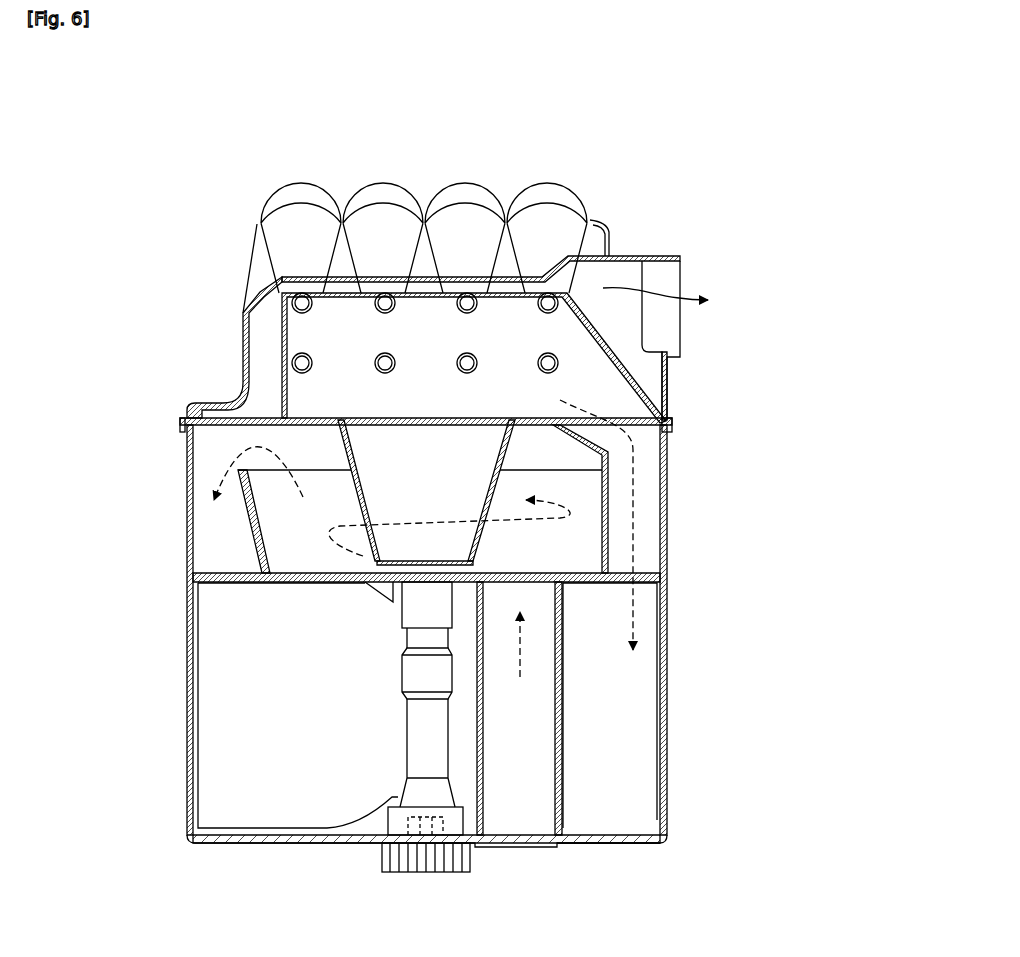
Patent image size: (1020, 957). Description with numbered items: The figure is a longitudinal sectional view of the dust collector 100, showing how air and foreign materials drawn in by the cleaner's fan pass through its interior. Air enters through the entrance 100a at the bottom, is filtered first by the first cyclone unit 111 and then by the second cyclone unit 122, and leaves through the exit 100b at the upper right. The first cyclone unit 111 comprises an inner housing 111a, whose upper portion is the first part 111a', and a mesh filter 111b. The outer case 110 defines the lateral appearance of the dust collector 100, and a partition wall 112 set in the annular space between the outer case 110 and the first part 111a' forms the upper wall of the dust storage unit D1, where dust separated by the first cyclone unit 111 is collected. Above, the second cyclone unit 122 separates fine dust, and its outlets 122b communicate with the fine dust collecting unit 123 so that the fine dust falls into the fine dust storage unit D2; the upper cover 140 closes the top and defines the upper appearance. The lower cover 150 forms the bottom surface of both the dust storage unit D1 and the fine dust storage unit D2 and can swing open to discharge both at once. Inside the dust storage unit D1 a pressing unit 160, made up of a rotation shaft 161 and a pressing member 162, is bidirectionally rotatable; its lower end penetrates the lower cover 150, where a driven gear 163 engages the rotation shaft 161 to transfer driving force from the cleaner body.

The dust collector 100 is at (208, 146).
The outer case 110 is at (187, 505).
The partition wall 112 is at (233, 572).
The first cyclone unit 111 is at (805, 480).
The inner housing 111a is at (681, 614).
The first part 111a' is at (651, 499).
The mesh filter 111b is at (505, 497).
The second cyclone unit 122 is at (549, 218).
The outlets 122b is at (292, 362).
The fine dust collecting unit 123 is at (612, 392).
The upper cover 140 is at (636, 256).
The entrance 100a is at (506, 846).
The exit 100b is at (667, 277).
The lower cover 150 is at (622, 845).
The pressing unit 160 is at (117, 677).
The rotation shaft 161 is at (417, 673).
The pressing member 162 is at (260, 760).
The driven gear 163 is at (403, 852).
The dust storage unit D1 is at (367, 823).
The fine dust storage unit D2 is at (627, 763).